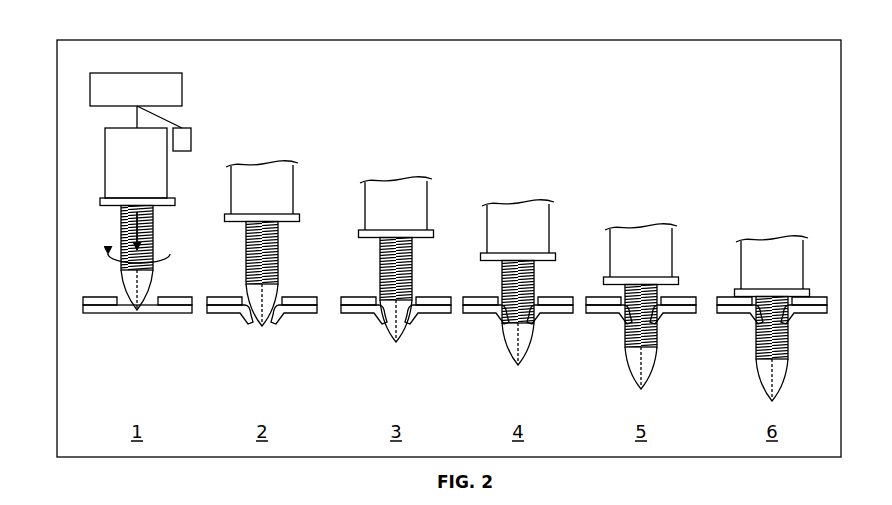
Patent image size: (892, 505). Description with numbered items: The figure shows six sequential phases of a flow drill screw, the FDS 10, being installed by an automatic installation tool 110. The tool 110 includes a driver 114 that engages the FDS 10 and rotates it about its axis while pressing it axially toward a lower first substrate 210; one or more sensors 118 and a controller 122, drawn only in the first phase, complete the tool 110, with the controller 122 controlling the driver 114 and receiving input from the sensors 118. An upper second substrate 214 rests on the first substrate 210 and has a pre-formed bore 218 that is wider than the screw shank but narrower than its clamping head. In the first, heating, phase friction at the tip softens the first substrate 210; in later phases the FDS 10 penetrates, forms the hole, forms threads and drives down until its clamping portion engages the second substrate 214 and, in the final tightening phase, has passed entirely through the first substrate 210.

The installation tool 110 is at (100, 62).
The controller 122 is at (183, 94).
The sensors 118 is at (192, 138).
The driver 114 is at (105, 173).
The flow drill screw (FDS) 10 is at (117, 246).
The pre-formed bore 218 is at (125, 296).
The second substrate 214 is at (85, 303).
The first substrate 210 is at (170, 313).